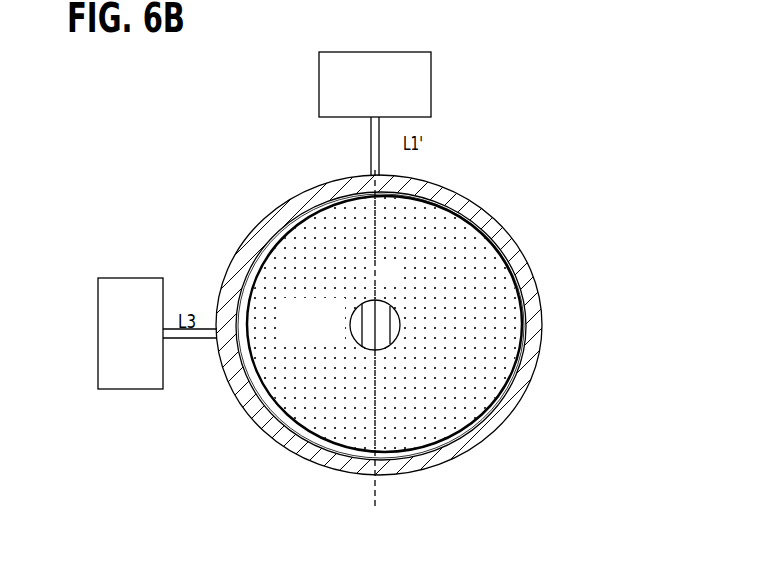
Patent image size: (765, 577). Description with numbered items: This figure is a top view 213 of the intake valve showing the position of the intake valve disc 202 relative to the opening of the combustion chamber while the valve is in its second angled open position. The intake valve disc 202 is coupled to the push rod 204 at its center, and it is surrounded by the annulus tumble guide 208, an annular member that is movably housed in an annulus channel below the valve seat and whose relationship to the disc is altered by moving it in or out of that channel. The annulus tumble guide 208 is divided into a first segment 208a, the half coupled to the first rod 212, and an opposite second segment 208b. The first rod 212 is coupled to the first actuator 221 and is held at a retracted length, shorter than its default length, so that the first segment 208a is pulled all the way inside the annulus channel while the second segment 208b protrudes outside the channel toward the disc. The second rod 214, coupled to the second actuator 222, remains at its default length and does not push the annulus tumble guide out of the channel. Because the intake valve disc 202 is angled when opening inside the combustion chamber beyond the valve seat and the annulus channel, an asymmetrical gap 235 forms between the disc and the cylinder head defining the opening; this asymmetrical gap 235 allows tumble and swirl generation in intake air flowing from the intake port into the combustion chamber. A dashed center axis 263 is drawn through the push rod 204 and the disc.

The intake valve disc 202 is at (400, 283).
The push rod 204 is at (372, 323).
The annulus tumble guide 208 is at (280, 430).
The first segment of the annulus tumble guide 208a is at (240, 378).
The second segment of the annulus tumble guide 208b is at (535, 296).
The first rod 212 is at (165, 340).
The top view 213 is at (182, 112).
The second rod 214 is at (374, 166).
The first actuator 221 is at (116, 278).
The second actuator 222 is at (328, 70).
The asymmetrical gap 235 is at (263, 263).
The axis 263 is at (379, 501).